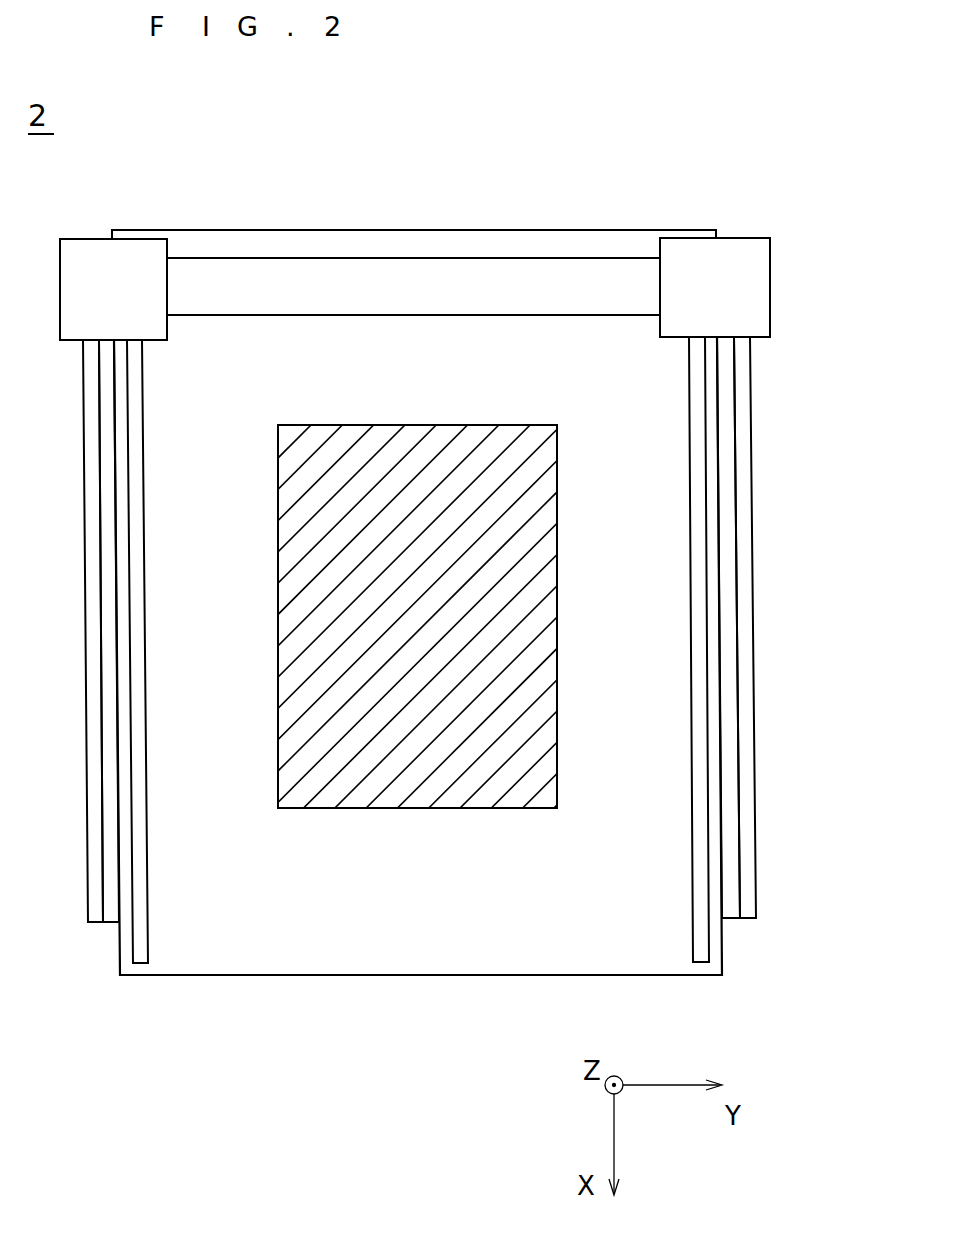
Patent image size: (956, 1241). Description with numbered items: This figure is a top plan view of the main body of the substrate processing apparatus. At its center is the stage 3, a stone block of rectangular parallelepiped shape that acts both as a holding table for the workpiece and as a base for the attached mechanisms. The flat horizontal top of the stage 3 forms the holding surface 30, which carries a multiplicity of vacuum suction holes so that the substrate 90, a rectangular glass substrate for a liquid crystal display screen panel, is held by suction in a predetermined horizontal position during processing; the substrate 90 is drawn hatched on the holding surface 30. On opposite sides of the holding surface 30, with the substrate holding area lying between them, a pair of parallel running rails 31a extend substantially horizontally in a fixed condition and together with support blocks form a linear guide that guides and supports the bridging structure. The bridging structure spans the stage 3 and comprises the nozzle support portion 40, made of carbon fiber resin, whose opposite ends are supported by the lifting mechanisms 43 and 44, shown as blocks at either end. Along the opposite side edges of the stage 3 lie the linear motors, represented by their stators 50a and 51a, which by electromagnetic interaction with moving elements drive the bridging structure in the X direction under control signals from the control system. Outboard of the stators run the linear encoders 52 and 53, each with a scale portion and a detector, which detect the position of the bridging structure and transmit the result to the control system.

The stage 3 is at (427, 975).
The holding surface 30 is at (550, 957).
The running rails 31a is at (150, 928).
The nozzle support portion 40 is at (378, 258).
The lifting mechanism 43 is at (80, 239).
The lifting mechanism 44 is at (735, 238).
The stator 50a is at (113, 922).
The stator 51a is at (737, 918).
The linear encoder 52 is at (95, 922).
The linear encoder 53 is at (755, 918).
The substrate 90 is at (353, 808).